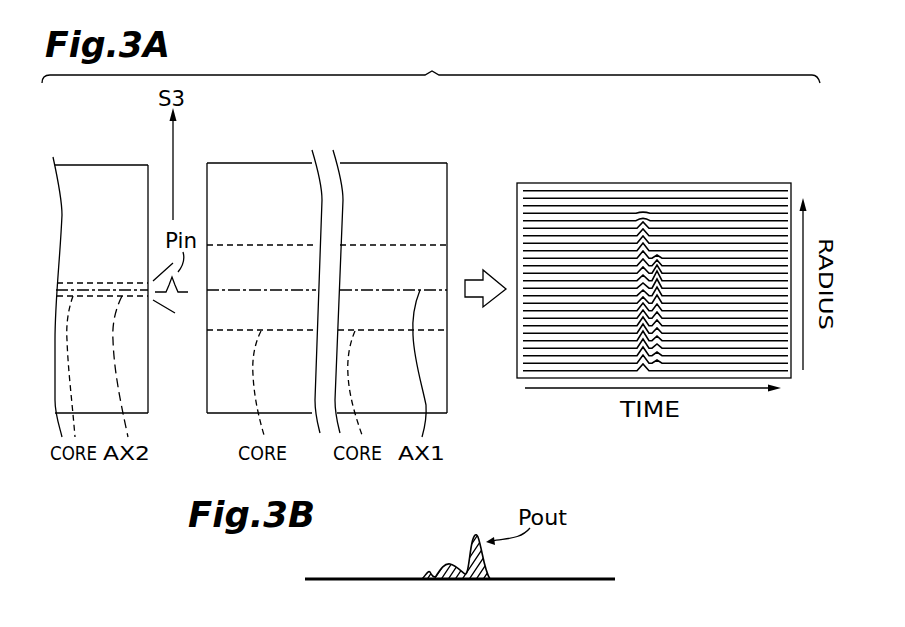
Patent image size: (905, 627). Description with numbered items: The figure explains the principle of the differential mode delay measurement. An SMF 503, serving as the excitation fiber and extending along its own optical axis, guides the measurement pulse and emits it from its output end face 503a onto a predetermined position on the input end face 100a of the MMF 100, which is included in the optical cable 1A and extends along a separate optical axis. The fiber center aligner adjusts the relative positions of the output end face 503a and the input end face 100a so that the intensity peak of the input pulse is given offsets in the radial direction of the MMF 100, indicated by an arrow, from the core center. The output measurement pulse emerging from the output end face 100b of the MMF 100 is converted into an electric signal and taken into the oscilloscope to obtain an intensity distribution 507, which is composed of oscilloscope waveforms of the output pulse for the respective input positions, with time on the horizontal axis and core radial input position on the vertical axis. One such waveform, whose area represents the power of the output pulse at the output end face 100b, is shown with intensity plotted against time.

The SMF (excitation fiber) 503 is at (73, 175).
The output end face 503a is at (147, 177).
The input end face 100a is at (204, 175).
The MMF 100 is at (327, 266).
The optical cable 1A is at (384, 146).
The output end face 100b is at (450, 175).
The intensity distribution 507 is at (707, 182).